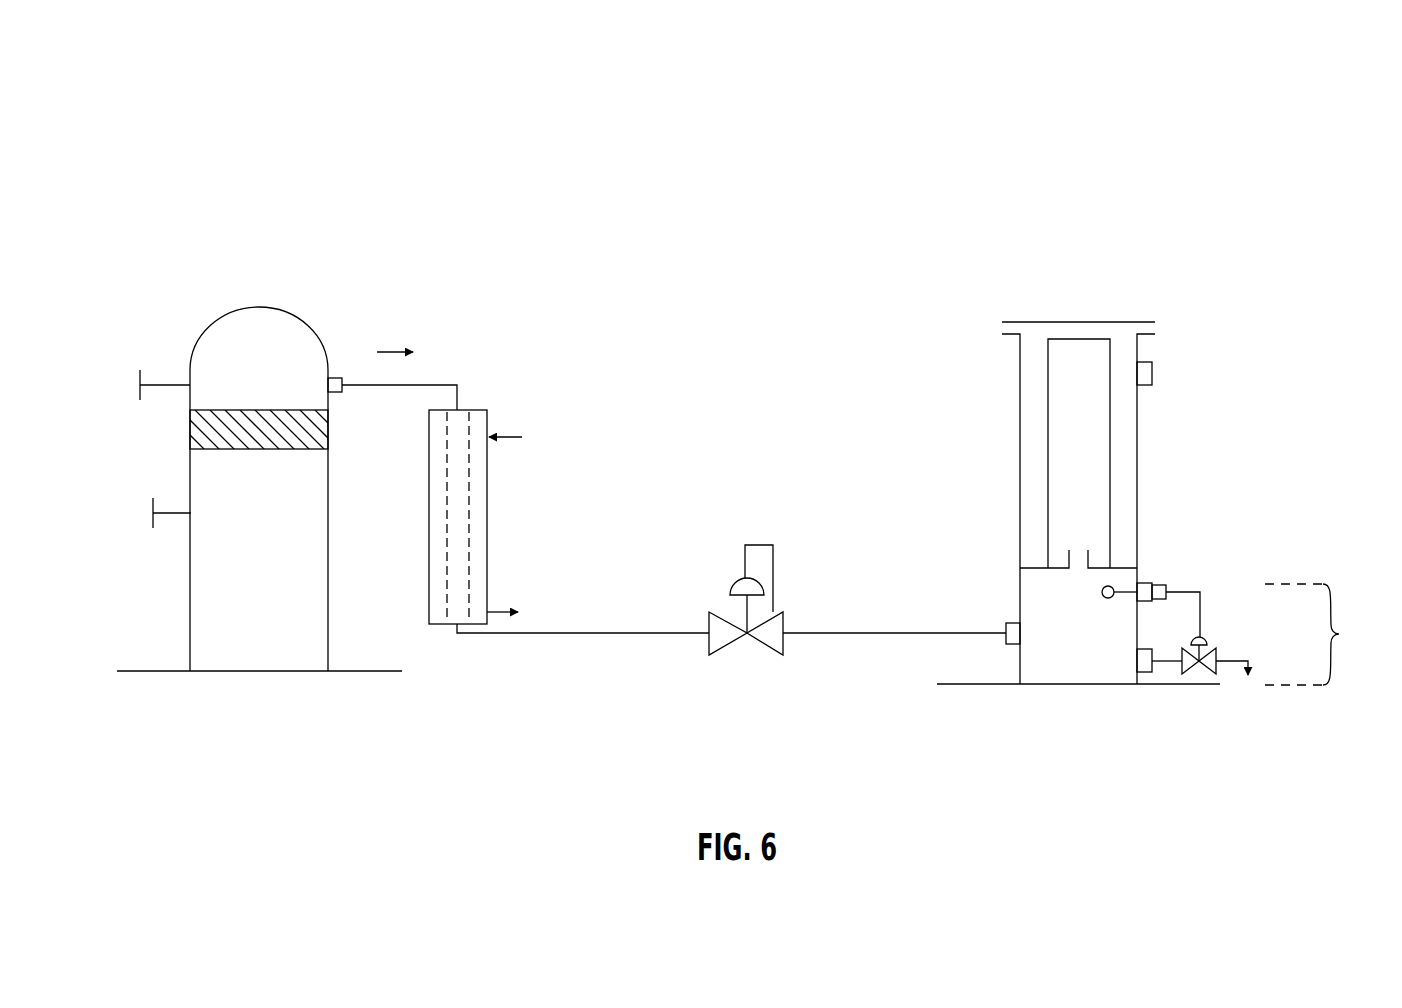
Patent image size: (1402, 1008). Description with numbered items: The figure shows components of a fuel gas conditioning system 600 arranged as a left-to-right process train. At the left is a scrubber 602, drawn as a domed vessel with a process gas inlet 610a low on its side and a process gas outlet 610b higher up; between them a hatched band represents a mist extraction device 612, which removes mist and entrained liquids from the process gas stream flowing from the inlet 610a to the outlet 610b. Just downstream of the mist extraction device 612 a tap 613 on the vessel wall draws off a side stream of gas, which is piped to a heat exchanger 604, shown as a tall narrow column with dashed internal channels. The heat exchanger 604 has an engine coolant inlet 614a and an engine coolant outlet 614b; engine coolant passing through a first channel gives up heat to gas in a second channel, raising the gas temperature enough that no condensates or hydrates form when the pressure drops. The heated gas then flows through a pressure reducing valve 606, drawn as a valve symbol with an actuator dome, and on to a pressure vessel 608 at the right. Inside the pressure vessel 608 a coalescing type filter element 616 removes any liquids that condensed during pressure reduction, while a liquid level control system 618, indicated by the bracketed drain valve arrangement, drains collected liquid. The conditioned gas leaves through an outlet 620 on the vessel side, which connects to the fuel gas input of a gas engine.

The fuel gas conditioning system 600 is at (104, 99).
The scrubber 602 is at (206, 321).
The heat exchanger 604 is at (468, 404).
The pressure reducing valve 606 is at (751, 643).
The pressure vessel 608 is at (1078, 691).
The process gas inlet 610a is at (153, 500).
The process gas outlet 610b is at (140, 372).
The mist extraction device 612 is at (261, 400).
The tap 613 is at (340, 398).
The engine coolant inlet 614a is at (511, 437).
The engine coolant outlet 614b is at (489, 612).
The coalescing type filter element 616 is at (1045, 413).
The liquid level control system 618 is at (1327, 634).
The outlet 620 is at (1152, 373).